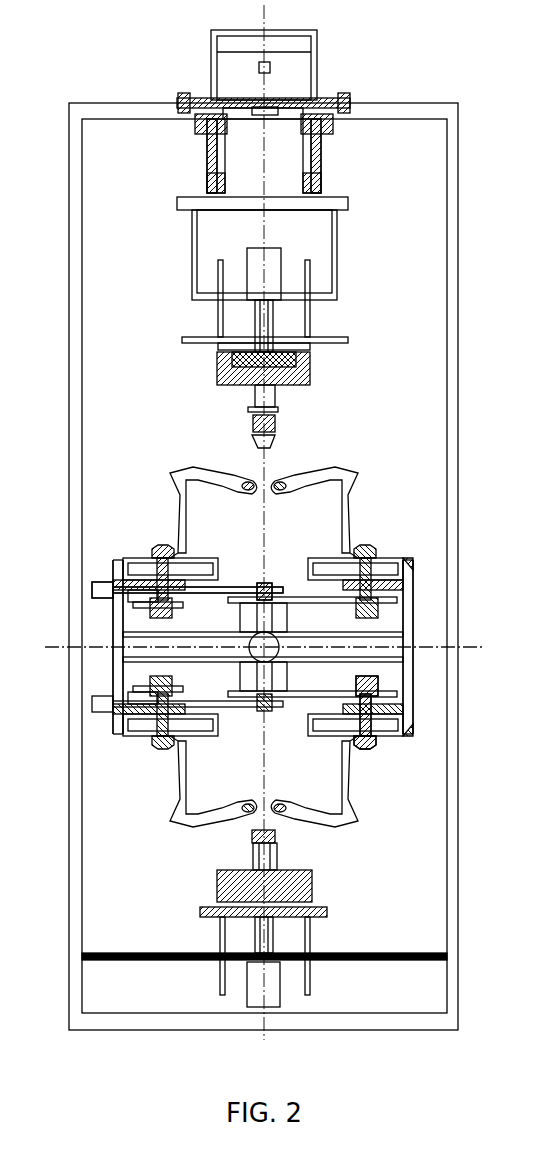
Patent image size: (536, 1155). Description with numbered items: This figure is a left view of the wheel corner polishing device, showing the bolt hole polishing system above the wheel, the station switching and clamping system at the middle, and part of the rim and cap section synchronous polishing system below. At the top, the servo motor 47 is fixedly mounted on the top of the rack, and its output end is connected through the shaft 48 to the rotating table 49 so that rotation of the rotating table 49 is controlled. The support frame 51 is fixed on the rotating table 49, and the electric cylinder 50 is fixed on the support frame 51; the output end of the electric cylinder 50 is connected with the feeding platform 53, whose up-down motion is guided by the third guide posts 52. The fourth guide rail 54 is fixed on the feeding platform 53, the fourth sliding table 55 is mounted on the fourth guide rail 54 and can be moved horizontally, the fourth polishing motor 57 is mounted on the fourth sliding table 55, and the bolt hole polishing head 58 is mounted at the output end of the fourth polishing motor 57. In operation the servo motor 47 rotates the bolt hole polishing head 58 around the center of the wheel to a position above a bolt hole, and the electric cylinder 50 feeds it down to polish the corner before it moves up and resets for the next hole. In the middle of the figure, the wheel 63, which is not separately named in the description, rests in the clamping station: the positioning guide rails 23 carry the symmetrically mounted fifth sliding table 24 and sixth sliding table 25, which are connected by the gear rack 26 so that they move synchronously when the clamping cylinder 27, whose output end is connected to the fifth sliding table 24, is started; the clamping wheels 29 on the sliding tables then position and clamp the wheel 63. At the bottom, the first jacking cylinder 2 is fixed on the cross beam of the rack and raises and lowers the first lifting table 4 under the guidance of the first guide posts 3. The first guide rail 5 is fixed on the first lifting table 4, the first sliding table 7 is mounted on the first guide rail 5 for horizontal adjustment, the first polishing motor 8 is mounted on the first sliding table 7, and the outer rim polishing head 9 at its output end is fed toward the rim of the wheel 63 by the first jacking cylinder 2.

The first jacking cylinder 2 is at (245, 997).
The first guide posts 3 is at (222, 985).
The first lifting table 4 is at (212, 920).
The first guide rail 5 is at (215, 897).
The first sliding table 7 is at (217, 872).
The first polishing motor 8 is at (255, 860).
The outer rim polishing head 9 is at (240, 810).
The positioning guide rails 23 is at (150, 657).
The fifth sliding table 24 is at (118, 563).
The sixth sliding table 25 is at (407, 562).
The gear rack 26 is at (262, 593).
The clamping cylinder 27 is at (110, 582).
The clamping wheels 29 is at (160, 550).
The servo motor 47 is at (222, 77).
The shaft 48 is at (287, 172).
The rotating table 49 is at (347, 203).
The electric cylinder 50 is at (277, 260).
The support frame 51 is at (303, 280).
The third guide posts 52 is at (307, 290).
The feeding platform 53 is at (347, 342).
The fourth guide rail 54 is at (237, 360).
The fourth sliding table 55 is at (217, 375).
The fourth polishing motor 57 is at (276, 408).
The bolt hole polishing head 58 is at (276, 445).
The wheel rim 63 is at (350, 500).